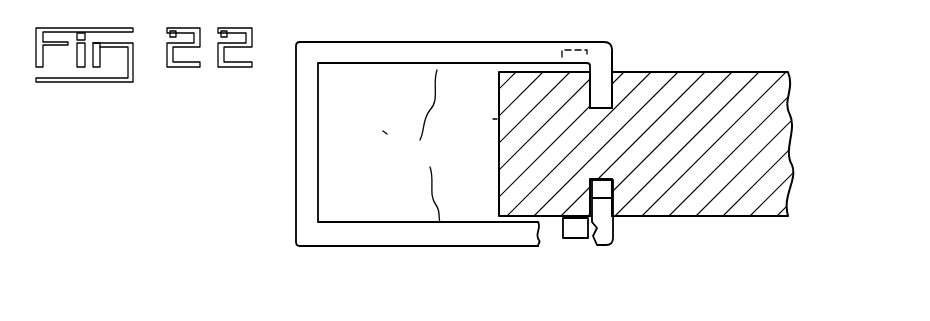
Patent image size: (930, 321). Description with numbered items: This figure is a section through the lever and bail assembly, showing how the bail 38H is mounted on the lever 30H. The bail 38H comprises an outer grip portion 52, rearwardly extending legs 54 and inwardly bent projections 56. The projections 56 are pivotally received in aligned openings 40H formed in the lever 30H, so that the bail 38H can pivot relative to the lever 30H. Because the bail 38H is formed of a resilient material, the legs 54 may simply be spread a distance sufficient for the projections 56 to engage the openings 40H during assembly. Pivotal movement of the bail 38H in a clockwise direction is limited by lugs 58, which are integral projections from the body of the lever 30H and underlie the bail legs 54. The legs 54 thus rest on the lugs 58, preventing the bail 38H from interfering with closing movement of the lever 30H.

The lever 30H is at (762, 217).
The bail 38H is at (408, 32).
The openings 40H is at (598, 70).
The outer grip portion 52 is at (296, 133).
The legs 54 is at (440, 146).
The inwardly bent projections 56 is at (613, 80).
The lugs 58 is at (586, 44).